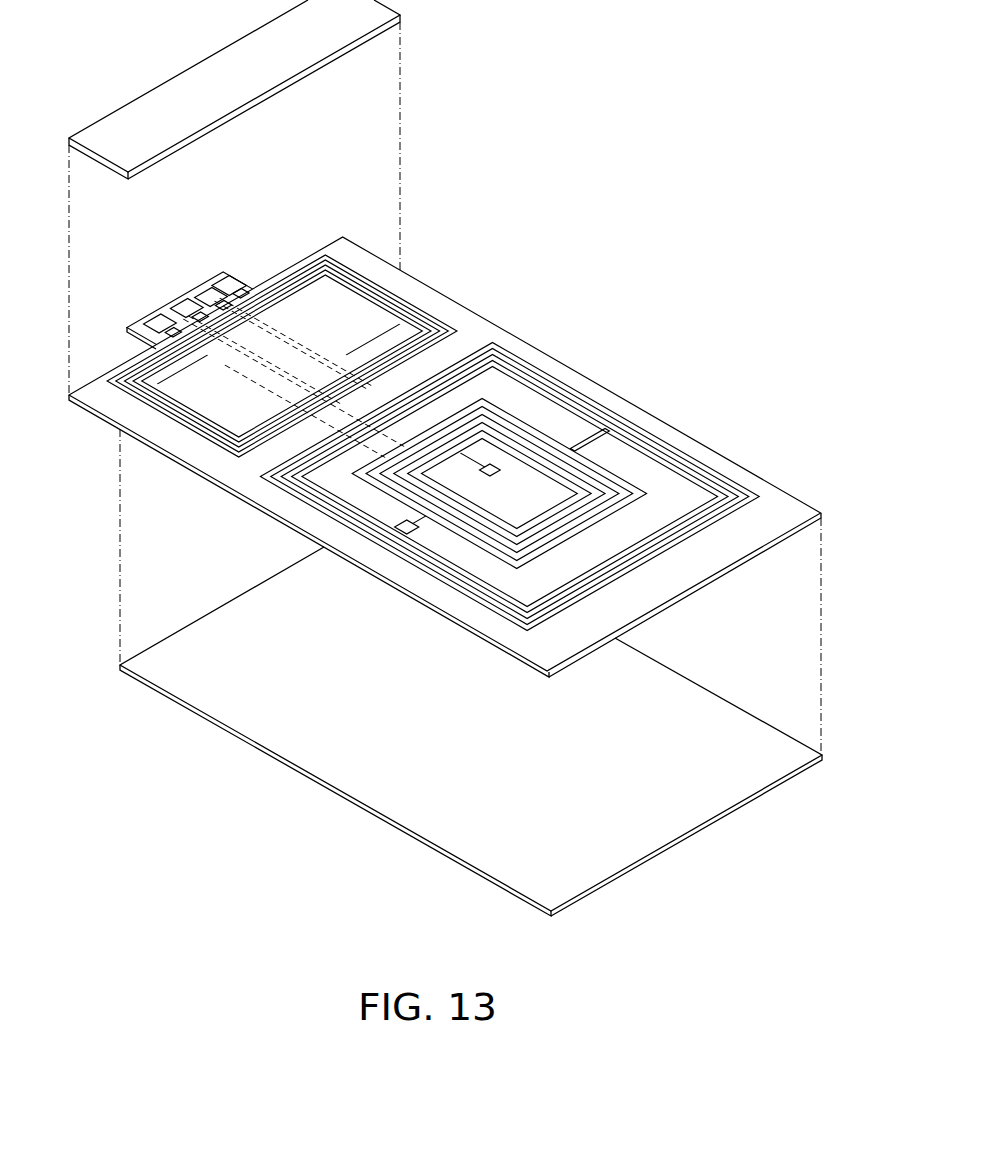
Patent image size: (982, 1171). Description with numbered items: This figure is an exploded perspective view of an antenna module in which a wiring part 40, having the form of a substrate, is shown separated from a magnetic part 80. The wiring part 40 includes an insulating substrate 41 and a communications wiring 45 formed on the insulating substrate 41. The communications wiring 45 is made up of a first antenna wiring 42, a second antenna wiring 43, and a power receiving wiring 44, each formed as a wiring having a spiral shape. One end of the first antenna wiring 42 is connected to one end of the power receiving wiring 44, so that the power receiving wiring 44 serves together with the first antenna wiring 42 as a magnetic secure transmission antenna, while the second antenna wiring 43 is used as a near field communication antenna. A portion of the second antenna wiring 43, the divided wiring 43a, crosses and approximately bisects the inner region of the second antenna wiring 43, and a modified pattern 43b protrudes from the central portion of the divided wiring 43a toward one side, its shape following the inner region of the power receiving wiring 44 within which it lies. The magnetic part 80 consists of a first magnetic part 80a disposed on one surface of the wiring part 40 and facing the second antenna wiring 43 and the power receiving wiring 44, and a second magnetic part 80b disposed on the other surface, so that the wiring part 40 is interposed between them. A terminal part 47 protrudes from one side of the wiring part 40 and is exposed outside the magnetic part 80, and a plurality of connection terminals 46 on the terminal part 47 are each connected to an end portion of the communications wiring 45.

The wiring part 40 is at (445, 552).
The insulating substrate 41 is at (768, 490).
The first antenna wiring 42 is at (282, 356).
The second antenna wiring 43 is at (487, 491).
The divided wiring 43a is at (413, 524).
The modified pattern 43b is at (477, 463).
The power receiving wiring 44 is at (509, 487).
The communications wiring 45 is at (430, 441).
The connection terminals 46 is at (190, 313).
The terminal part 47 is at (233, 288).
The magnetic part 80 is at (419, 458).
The first magnetic part 80a is at (471, 731).
The second magnetic part 80b is at (111, 151).